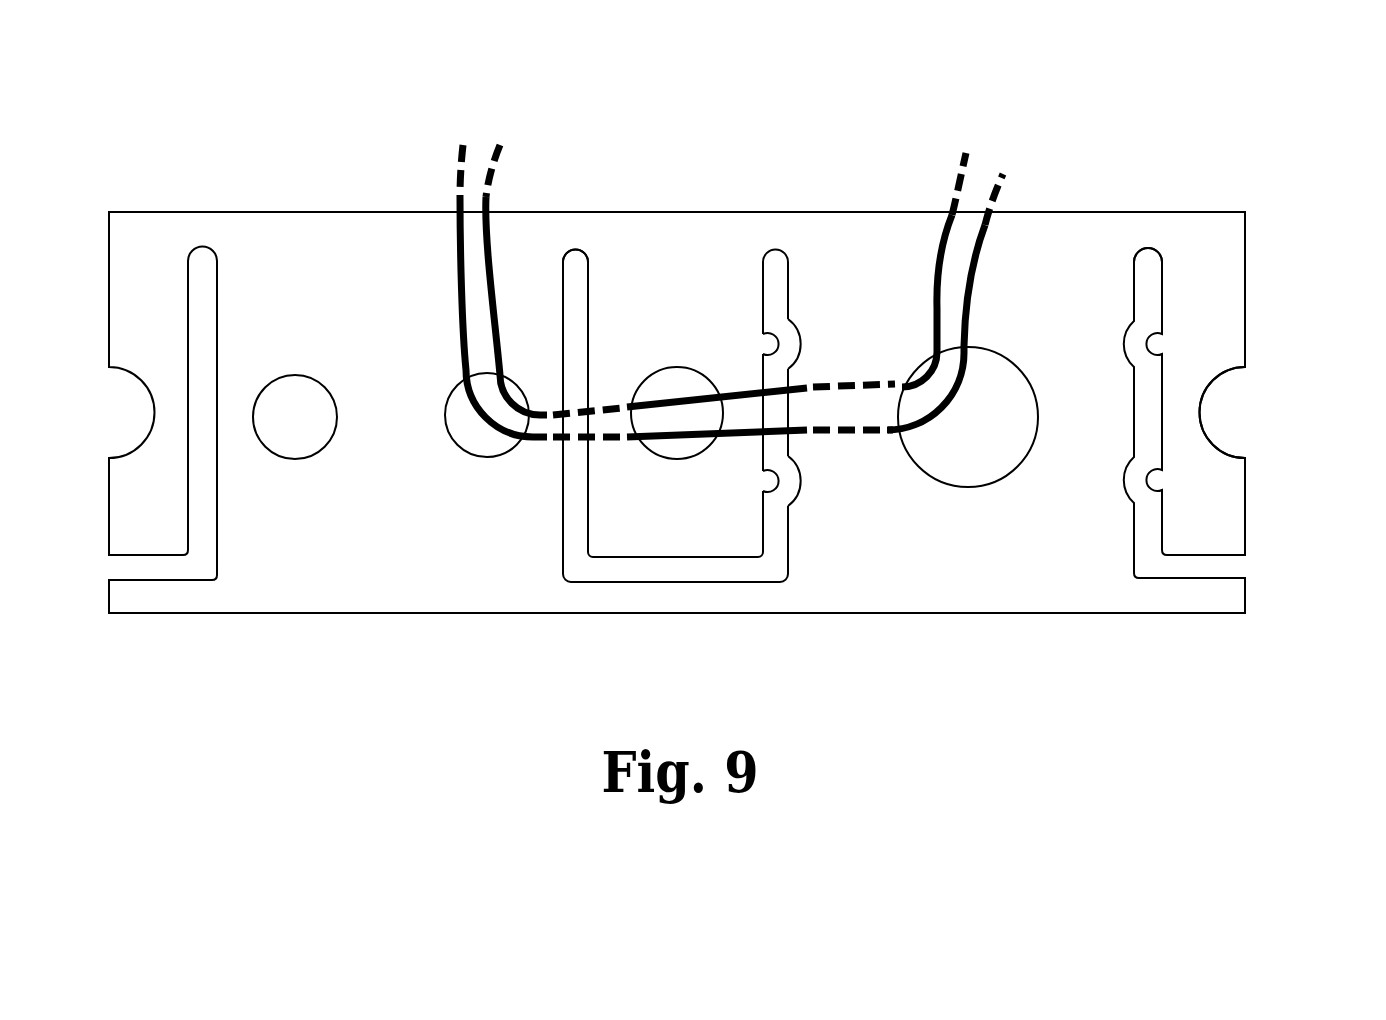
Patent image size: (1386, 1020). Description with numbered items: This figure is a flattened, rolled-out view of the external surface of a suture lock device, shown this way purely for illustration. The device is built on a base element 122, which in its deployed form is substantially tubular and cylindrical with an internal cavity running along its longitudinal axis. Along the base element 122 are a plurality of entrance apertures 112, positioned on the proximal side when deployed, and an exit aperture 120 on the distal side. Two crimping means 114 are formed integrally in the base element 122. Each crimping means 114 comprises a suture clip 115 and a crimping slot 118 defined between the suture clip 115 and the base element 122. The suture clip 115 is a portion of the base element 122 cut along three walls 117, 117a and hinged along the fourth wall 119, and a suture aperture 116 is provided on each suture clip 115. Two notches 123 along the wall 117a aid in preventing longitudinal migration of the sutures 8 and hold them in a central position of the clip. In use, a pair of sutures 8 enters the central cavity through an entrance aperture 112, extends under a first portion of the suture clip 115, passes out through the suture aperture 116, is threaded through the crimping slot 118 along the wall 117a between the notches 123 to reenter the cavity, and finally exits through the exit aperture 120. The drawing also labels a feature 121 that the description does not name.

The sutures 8 is at (466, 145).
The entrance apertures 112 is at (293, 435).
The crimping means 114 is at (563, 248).
The suture clip 115 is at (617, 530).
The suture aperture 116 is at (680, 448).
The wall 117 is at (578, 262).
The wall 117a is at (760, 303).
The crimping slot 118 is at (793, 415).
The fourth wall 119 is at (777, 245).
The exit aperture 120 is at (994, 454).
The slot bottom portion 121 is at (653, 567).
The base element 122 is at (317, 548).
The notches 123 is at (767, 485).